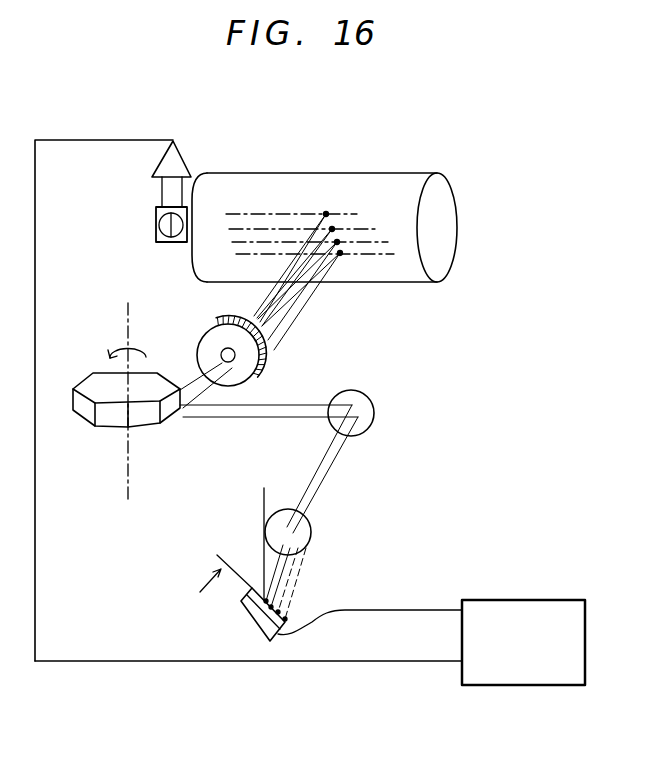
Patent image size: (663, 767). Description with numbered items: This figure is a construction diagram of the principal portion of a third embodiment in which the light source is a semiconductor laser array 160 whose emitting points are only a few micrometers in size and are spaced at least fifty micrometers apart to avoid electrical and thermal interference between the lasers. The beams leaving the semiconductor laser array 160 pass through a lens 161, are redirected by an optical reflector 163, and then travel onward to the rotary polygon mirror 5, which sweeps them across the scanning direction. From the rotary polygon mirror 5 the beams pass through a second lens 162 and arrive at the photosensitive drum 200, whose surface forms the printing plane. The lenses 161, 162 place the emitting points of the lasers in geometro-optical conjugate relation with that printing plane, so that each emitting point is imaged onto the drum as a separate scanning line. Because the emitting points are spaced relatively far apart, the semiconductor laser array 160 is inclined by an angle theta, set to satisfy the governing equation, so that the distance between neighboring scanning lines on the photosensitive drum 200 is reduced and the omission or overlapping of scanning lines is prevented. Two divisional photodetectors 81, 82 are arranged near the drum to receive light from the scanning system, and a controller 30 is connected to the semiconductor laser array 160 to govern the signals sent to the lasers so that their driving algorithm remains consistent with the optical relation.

The rotary polygon mirror 5 is at (108, 428).
The controller 30 is at (522, 600).
The divisional photodetector 81 is at (158, 226).
The divisional photodetector 82 is at (172, 238).
The semiconductor laser array 160 is at (246, 616).
The lens 161 is at (311, 532).
The lens 162 is at (213, 324).
The optical reflector 163 is at (374, 410).
The photosensitive drum 200 is at (320, 173).